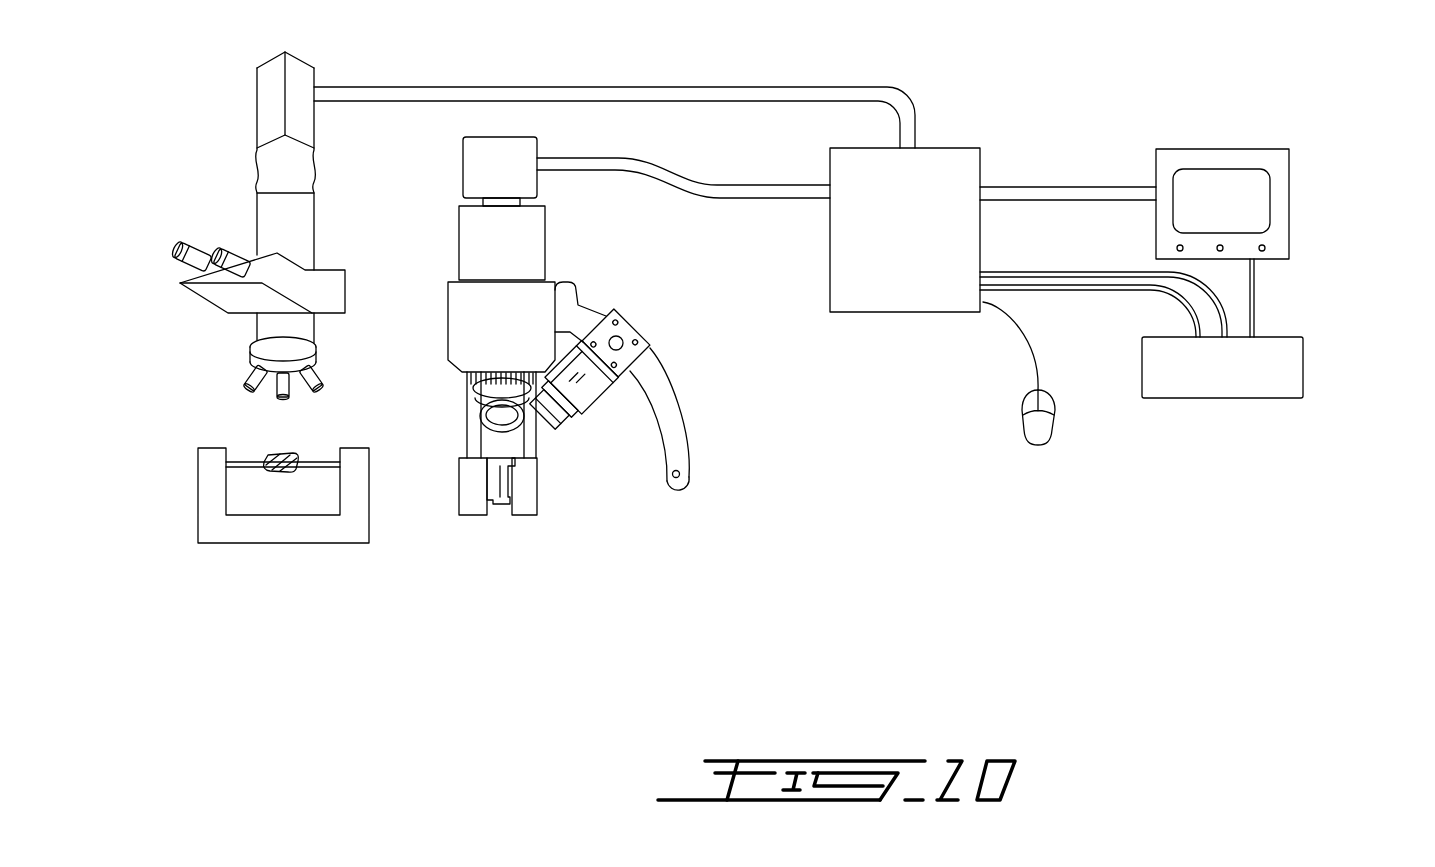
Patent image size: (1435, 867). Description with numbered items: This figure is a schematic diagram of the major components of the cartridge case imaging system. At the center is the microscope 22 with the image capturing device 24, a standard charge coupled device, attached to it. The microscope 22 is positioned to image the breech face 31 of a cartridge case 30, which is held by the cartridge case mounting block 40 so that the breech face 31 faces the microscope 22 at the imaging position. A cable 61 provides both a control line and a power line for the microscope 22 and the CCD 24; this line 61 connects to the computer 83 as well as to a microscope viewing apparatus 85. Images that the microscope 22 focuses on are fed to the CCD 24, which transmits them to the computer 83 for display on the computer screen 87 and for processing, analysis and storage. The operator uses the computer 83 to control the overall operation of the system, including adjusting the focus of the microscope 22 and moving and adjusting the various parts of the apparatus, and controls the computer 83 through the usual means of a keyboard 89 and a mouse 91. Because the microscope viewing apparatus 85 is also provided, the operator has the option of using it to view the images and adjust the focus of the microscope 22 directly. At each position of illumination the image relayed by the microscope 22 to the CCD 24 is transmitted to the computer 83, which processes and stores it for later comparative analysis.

The microscope 22 is at (545, 230).
The image capturing device 24 is at (463, 163).
The cartridge case 30 is at (500, 503).
The breech face 31 is at (510, 458).
The cartridge case mounting block 40 is at (465, 545).
The cable 61 is at (735, 198).
The computer 83 is at (947, 148).
The microscope viewing apparatus 85 is at (205, 305).
The computer screen 87 is at (1197, 149).
The keyboard 89 is at (1303, 375).
The mouse 91 is at (1055, 428).